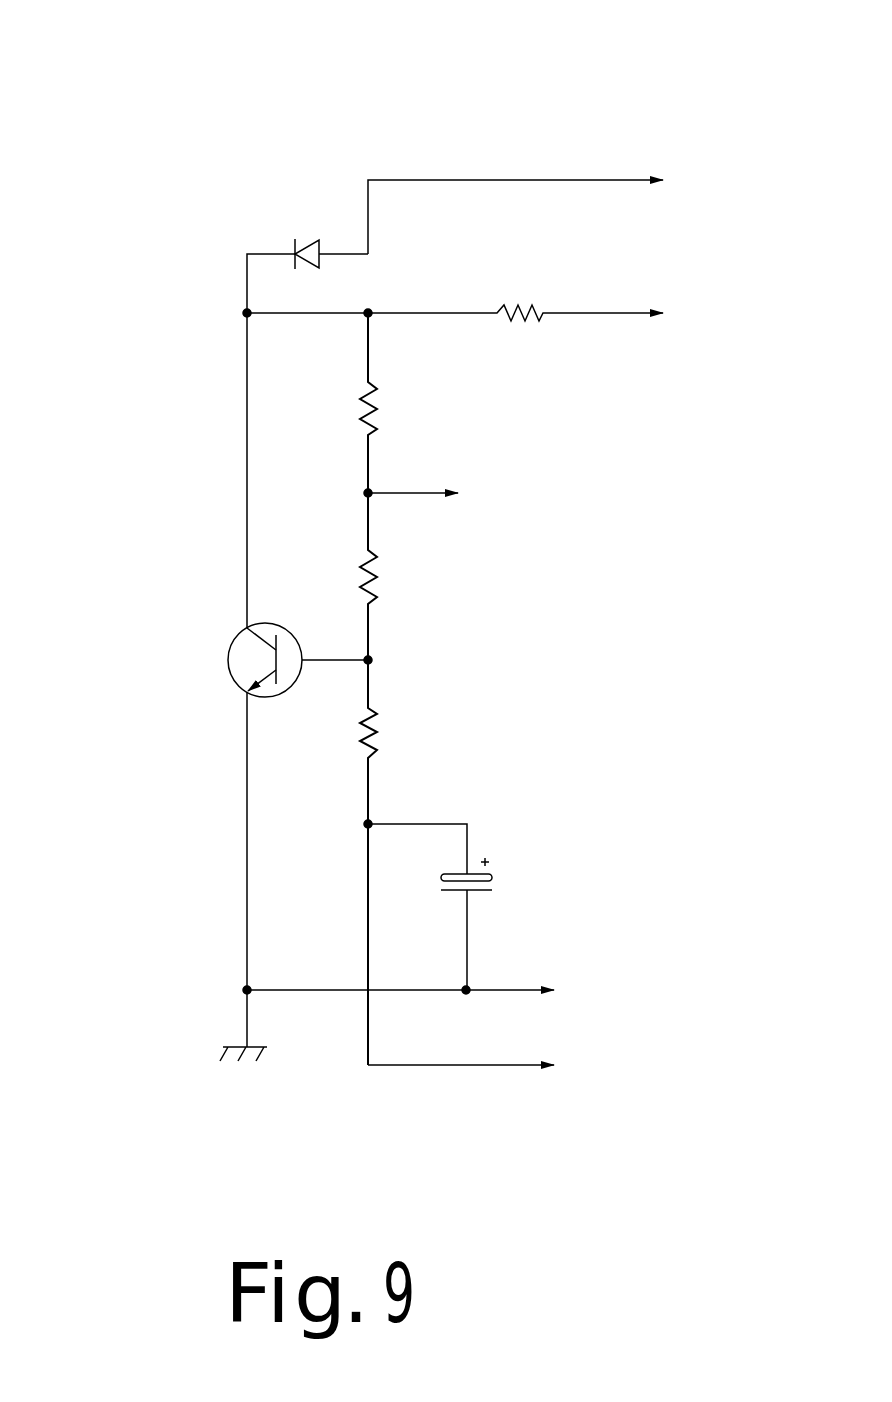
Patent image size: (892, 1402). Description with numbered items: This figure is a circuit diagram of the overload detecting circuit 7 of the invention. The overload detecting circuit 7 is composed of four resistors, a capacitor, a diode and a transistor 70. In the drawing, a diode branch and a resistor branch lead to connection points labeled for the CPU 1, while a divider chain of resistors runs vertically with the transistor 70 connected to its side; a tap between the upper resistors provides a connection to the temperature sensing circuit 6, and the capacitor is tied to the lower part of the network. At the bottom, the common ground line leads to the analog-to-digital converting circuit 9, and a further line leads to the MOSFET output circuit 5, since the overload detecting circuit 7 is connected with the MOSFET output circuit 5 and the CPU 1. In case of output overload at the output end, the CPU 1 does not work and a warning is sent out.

The overload detecting circuit 7 is at (162, 131).
The CPU 1 is at (473, 243).
The temperature sensing circuit 6 is at (432, 489).
The transistor 70 is at (260, 652).
The analog-to-digital converting circuit 9 is at (422, 987).
The MOSFET output circuit 5 is at (483, 1064).